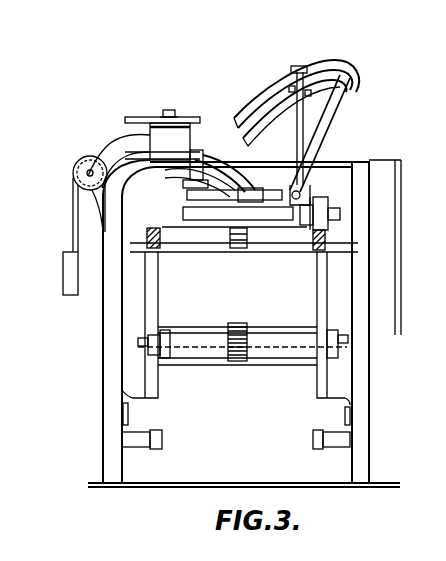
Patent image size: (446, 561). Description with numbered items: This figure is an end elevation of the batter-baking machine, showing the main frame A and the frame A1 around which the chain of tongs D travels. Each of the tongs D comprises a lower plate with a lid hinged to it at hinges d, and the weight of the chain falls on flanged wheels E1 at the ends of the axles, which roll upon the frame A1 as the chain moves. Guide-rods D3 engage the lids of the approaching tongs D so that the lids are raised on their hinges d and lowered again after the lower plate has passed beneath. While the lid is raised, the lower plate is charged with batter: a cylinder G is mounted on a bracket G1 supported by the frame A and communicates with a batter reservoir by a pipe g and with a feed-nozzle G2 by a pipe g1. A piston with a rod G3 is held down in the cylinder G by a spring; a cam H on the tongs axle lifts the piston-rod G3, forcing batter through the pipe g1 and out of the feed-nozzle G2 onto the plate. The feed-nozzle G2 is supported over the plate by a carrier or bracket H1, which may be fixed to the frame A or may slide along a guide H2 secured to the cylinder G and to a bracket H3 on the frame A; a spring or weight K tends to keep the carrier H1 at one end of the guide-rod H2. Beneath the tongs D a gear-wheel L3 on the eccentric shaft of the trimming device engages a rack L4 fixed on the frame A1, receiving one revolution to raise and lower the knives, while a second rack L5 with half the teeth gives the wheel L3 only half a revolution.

The main frame A is at (356, 410).
The frame A1 is at (317, 245).
The gear-wheel L3 is at (240, 240).
The rack L4 is at (230, 343).
The second rack L5 is at (240, 248).
The pipe g is at (145, 120).
The pipe g1 is at (203, 113).
The cylinder G is at (163, 137).
The bracket G1 is at (170, 145).
The feed-nozzle G2 is at (275, 205).
The piston-rod G3 is at (129, 180).
The cam H is at (160, 200).
The carrier or bracket H1 is at (220, 180).
The guide H2 is at (223, 153).
The bracket H3 is at (88, 177).
The spring or weight K is at (68, 278).
The tongs or plates D is at (227, 210).
The guide-rods D3 is at (360, 77).
The hinges d is at (302, 197).
The flanged wheels E1 is at (320, 220).